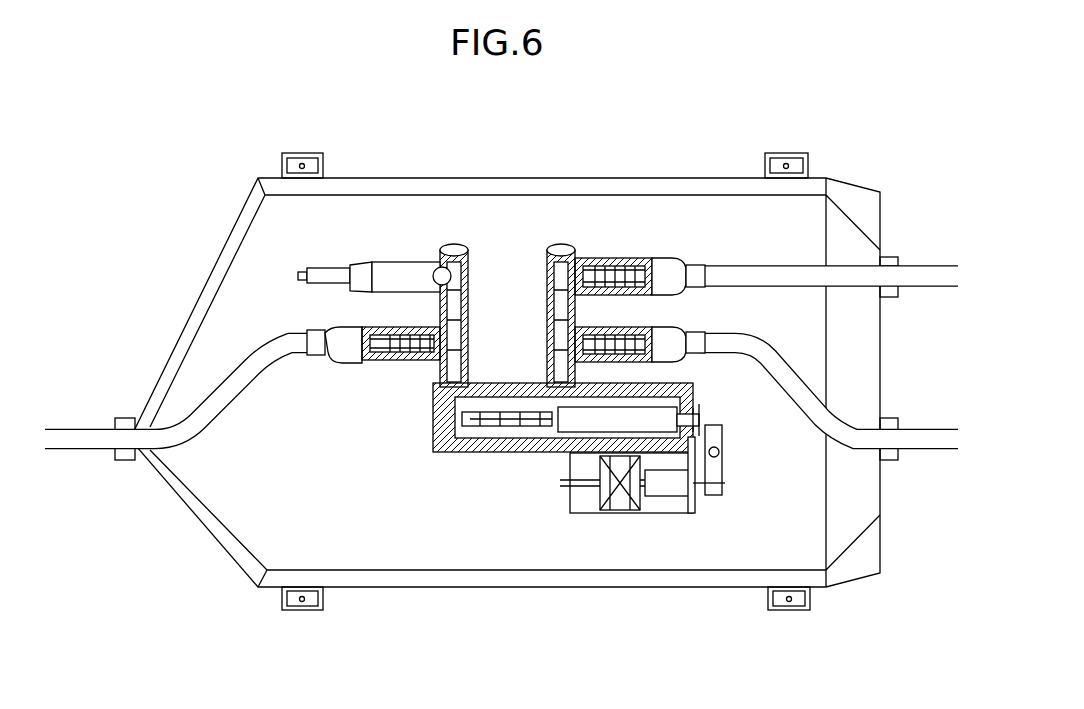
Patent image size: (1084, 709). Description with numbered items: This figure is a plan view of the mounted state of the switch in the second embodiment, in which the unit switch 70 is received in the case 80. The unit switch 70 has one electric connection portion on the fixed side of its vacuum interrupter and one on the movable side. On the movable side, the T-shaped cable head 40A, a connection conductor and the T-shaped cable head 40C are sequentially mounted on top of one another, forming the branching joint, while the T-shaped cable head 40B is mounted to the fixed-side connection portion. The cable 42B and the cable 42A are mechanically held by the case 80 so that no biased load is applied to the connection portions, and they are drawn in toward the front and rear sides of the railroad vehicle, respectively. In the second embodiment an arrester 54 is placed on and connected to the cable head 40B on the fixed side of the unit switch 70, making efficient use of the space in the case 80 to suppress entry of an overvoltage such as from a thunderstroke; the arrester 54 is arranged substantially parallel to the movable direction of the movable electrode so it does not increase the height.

The case 80 is at (847, 178).
The arrester 54 is at (430, 250).
The unit switch 70 is at (498, 463).
The T-shaped cable head 40A is at (678, 312).
The T-shaped cable head 40B is at (365, 315).
The T-shaped cable head 40C is at (637, 248).
The cable 42A is at (920, 430).
The cable 42B is at (87, 428).